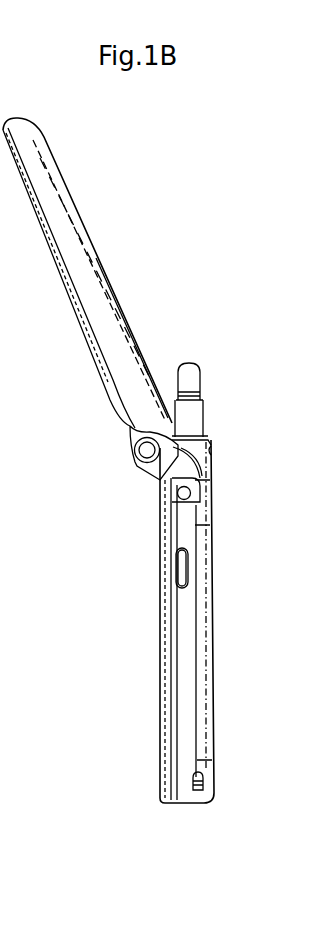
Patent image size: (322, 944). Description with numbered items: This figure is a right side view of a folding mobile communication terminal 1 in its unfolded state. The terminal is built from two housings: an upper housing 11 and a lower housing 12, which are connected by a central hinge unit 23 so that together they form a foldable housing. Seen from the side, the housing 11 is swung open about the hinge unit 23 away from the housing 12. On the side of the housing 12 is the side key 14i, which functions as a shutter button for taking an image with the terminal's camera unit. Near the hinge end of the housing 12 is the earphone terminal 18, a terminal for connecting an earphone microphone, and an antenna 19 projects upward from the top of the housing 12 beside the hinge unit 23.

The folding mobile communication terminal 1 is at (141, 497).
The housing 11 is at (53, 252).
The housing 12 is at (160, 660).
The side key 14i is at (182, 570).
The earphone terminal 18 is at (196, 492).
The antenna 19 is at (200, 375).
The central hinge unit 23 is at (135, 456).